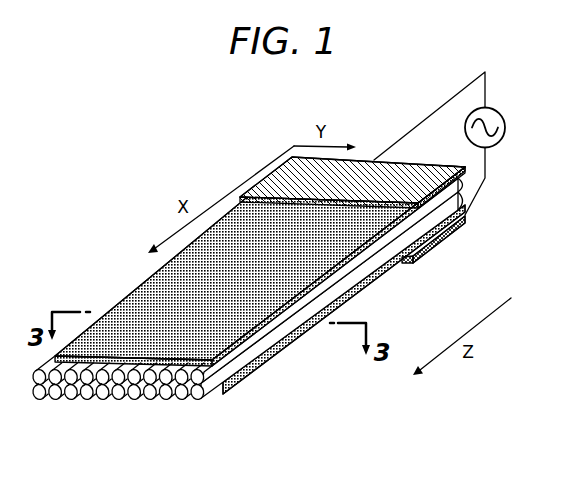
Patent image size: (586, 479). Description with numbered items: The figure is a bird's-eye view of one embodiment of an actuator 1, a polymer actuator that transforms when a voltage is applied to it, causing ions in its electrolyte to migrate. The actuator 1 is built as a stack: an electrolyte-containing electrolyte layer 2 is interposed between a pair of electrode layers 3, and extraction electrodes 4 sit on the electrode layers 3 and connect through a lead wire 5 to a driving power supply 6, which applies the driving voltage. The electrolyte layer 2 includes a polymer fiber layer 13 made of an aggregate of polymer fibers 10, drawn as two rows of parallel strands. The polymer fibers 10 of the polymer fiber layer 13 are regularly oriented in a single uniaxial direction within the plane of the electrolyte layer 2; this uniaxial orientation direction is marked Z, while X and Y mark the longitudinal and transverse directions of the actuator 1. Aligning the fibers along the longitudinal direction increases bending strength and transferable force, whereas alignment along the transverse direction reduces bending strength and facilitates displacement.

The actuator 1 is at (164, 143).
The electrolyte layer 2 is at (232, 315).
The electrode layer 3 is at (137, 297).
The extraction electrode 4 is at (280, 173).
The lead wire 5 is at (431, 110).
The driving power supply 6 is at (505, 120).
The polymer fiber 10 is at (131, 400).
The polymer fiber layer 13 is at (258, 382).